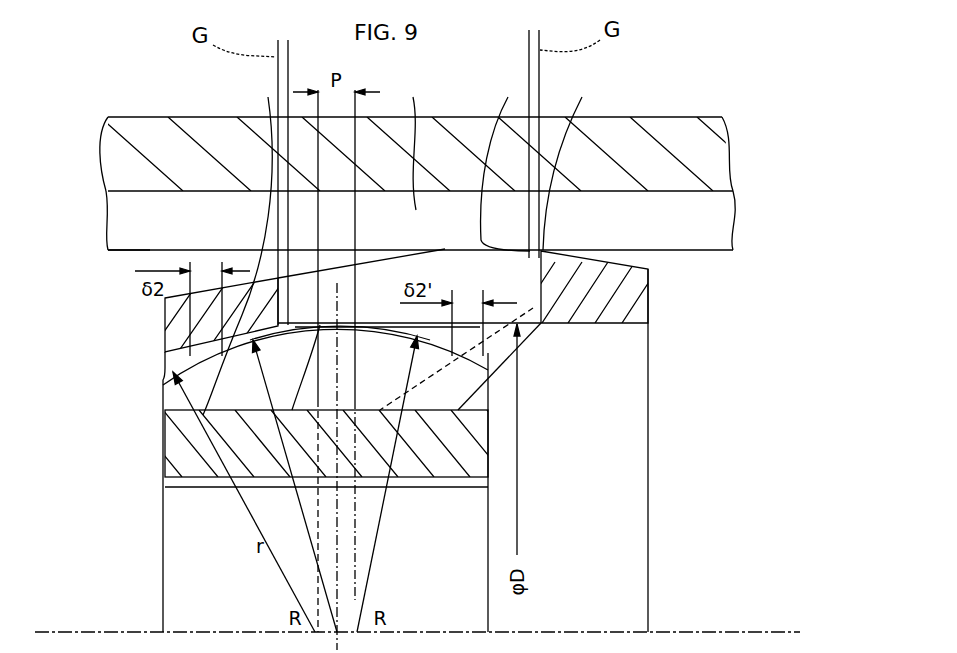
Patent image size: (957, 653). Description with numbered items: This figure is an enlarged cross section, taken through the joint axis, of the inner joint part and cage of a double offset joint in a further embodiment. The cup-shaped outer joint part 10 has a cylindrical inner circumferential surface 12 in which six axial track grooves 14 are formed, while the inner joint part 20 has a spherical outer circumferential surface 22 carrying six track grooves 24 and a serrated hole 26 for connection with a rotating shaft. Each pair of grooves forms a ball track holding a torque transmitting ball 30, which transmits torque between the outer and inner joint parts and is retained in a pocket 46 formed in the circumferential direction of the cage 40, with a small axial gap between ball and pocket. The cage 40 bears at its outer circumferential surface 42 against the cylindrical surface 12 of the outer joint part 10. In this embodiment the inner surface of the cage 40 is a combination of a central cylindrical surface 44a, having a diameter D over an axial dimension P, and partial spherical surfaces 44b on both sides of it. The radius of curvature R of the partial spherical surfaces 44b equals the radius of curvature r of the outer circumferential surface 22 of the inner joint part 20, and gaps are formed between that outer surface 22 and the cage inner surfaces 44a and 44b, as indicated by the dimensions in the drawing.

The outer joint part 10 is at (203, 134).
The inner circumferential surface 12 is at (142, 256).
The track groove 14 is at (135, 221).
The inner joint part 20 is at (458, 448).
The outer circumferential surface 22 is at (241, 242).
The track groove 24 is at (172, 394).
The serrated hole 26 is at (212, 488).
The torque transmitting ball 30 is at (413, 140).
The cage 40 is at (640, 293).
The outer circumferential surface 42 is at (505, 160).
The cylindrical surface 44a is at (225, 438).
The partial spherical surface 44b is at (245, 398).
The pocket 46 is at (570, 160).